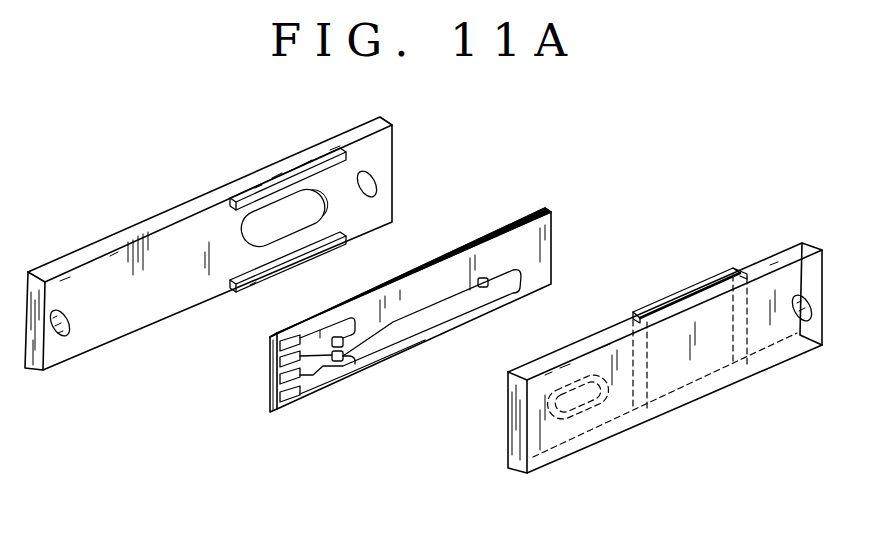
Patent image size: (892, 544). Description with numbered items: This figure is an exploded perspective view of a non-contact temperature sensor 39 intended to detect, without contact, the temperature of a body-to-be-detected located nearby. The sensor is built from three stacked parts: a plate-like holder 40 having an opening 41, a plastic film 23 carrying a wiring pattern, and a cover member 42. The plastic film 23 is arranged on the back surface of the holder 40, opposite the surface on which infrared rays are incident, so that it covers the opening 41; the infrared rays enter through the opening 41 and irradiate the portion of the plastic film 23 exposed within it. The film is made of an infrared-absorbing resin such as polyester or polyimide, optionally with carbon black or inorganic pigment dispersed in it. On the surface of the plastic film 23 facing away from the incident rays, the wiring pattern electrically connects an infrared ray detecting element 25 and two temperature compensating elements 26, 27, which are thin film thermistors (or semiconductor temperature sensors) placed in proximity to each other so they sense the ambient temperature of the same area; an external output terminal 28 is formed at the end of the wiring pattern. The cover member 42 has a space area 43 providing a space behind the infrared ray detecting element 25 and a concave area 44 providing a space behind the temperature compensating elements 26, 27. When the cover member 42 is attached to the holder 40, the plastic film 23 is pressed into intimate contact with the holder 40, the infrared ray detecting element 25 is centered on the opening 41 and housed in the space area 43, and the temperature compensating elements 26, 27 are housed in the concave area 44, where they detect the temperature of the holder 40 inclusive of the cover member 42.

The non-contact temperature sensor 39 is at (646, 130).
The plate-like holder 40 is at (243, 243).
The opening 41 is at (305, 210).
The plastic film 23 is at (405, 310).
The infrared ray detecting element 25 is at (481, 278).
The temperature compensating element 26 is at (343, 361).
The temperature compensating element 27 is at (332, 338).
The external output terminal 28 is at (278, 362).
The cover member 42 is at (665, 364).
The space area 43 is at (708, 290).
The concave area 44 is at (575, 410).